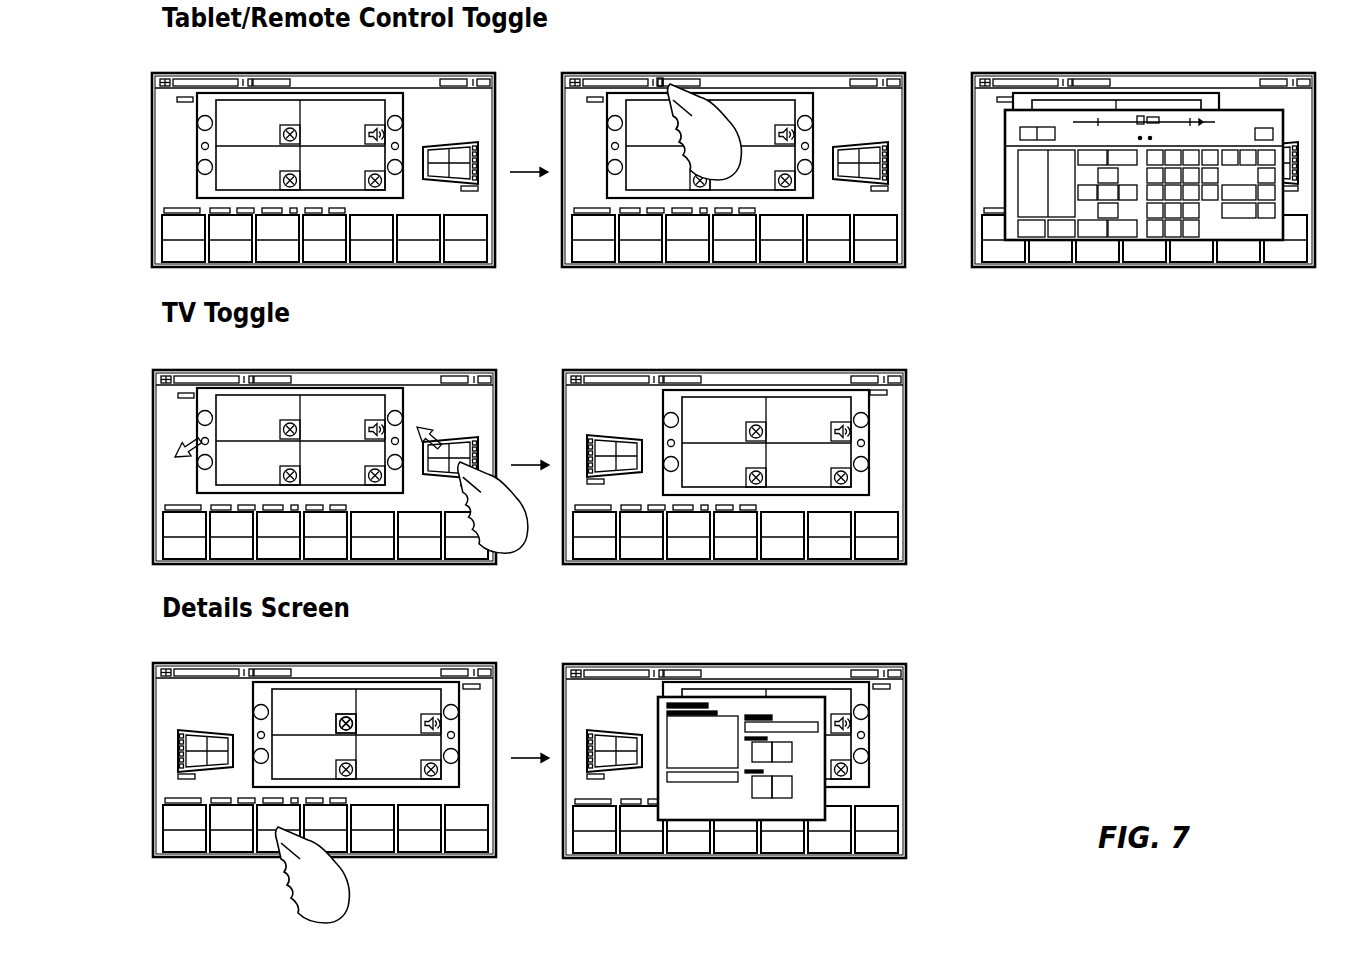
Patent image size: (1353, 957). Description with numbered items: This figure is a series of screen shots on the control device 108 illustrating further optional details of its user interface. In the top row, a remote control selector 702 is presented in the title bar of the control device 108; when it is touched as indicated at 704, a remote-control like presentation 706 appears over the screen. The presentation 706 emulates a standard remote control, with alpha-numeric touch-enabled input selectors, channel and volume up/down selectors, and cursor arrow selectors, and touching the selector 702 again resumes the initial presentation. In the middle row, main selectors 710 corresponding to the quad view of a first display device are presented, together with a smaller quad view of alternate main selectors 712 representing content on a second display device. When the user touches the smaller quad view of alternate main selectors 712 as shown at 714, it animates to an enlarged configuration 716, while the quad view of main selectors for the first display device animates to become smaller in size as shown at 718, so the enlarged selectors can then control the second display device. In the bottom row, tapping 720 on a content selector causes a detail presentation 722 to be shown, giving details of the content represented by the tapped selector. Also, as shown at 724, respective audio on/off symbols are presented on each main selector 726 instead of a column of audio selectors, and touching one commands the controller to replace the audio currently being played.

The control device 108 is at (380, 73).
The remote control selector 702 is at (320, 93).
The touch on remote control selector 704 is at (670, 80).
The remote-control like presentation 706 is at (1233, 102).
The main selectors 710 is at (320, 387).
The smaller quad view of alternate main selectors 712 is at (465, 440).
The touch on alternate main selectors 714 is at (517, 545).
The enlarged configuration 716 is at (795, 390).
The smaller-size main selectors 718 is at (622, 440).
The tapping on content selector 720 is at (337, 892).
The detail presentation 722 is at (795, 697).
The audio on/off symbol 724 is at (348, 713).
The main selector 726 is at (310, 702).